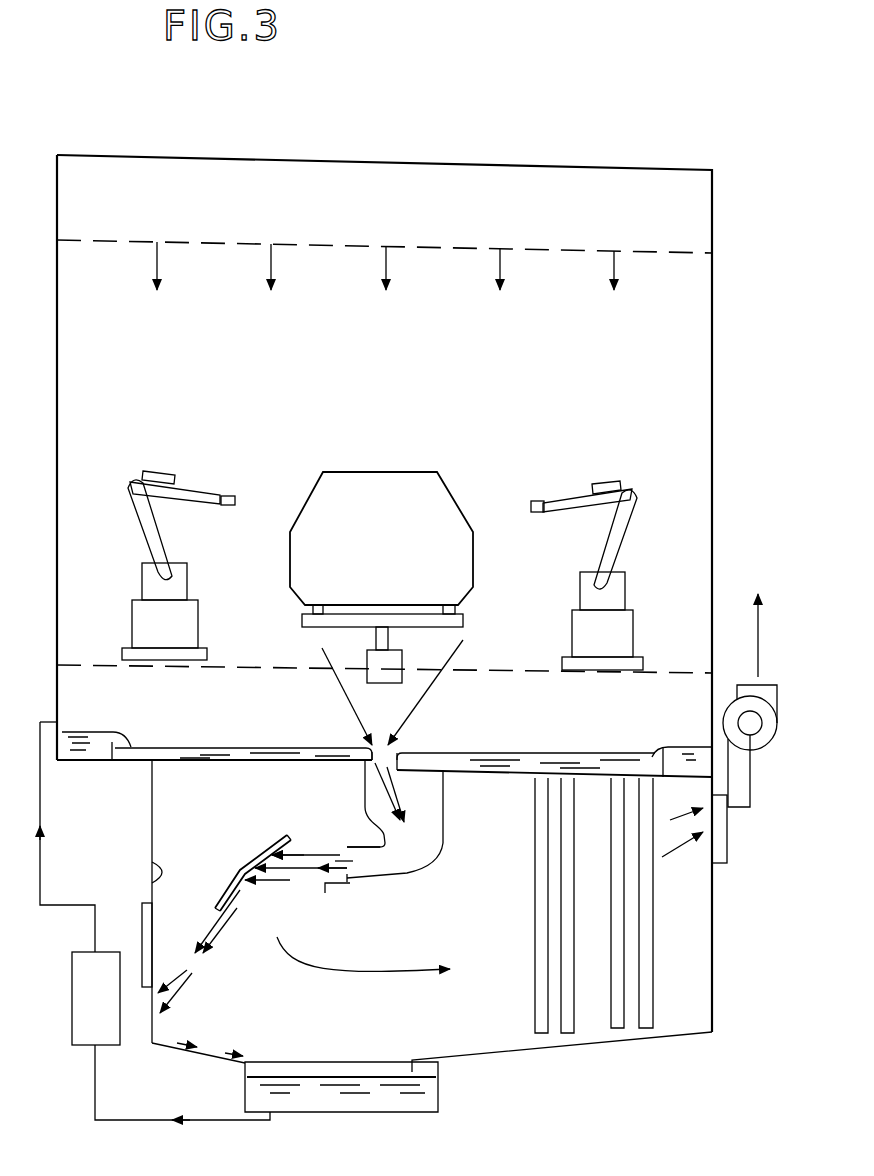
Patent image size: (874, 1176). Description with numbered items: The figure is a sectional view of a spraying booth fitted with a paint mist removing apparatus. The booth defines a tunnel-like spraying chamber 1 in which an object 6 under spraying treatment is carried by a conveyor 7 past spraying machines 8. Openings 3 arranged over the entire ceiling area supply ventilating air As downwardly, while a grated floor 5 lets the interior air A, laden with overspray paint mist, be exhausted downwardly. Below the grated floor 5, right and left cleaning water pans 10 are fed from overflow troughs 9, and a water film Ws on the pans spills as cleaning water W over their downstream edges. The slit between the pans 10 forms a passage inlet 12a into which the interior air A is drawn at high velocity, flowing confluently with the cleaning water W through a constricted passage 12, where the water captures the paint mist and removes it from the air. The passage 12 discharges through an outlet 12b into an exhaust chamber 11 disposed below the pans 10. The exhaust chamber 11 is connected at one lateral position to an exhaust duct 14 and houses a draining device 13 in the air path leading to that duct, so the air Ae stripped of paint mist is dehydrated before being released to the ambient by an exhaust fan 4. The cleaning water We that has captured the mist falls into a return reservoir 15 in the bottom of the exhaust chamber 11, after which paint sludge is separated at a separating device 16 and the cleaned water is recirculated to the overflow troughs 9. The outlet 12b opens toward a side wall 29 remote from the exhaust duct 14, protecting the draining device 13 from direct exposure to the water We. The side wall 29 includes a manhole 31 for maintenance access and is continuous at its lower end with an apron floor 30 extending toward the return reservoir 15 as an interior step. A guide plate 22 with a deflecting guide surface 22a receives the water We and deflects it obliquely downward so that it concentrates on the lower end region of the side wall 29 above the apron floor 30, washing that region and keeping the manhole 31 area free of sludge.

The spraying chamber 1 is at (716, 306).
The openings 3 is at (205, 243).
The ventilating air As is at (272, 257).
The exhaust fan 4 is at (748, 680).
The grated floor 5 is at (243, 665).
The object under spraying treatment 6 is at (433, 500).
The conveyor 7 is at (390, 665).
The spraying machines 8 is at (140, 485).
The overflow troughs 9 is at (111, 755).
The cleaning water pans 10 is at (240, 767).
The water film Ws is at (170, 753).
The cleaning water W is at (578, 760).
The interior air A is at (413, 695).
The exhaust chamber 11 is at (432, 916).
The constricted passage 12 is at (413, 843).
The passage inlet 12a is at (383, 760).
The outlet 12b is at (345, 853).
The draining device 13 is at (620, 1018).
The exhaust duct 14 is at (741, 810).
The return reservoir 15 is at (438, 1092).
The separating device 16 is at (108, 1040).
The guide plate 22 is at (243, 865).
The deflecting guide surface 22a is at (238, 893).
The cleaning water having captured the paint mist We is at (267, 880).
The air stripped of the paint mist Ae is at (413, 967).
The side wall 29 is at (163, 868).
The apron floor 30 is at (212, 1057).
The manhole 31 is at (147, 918).